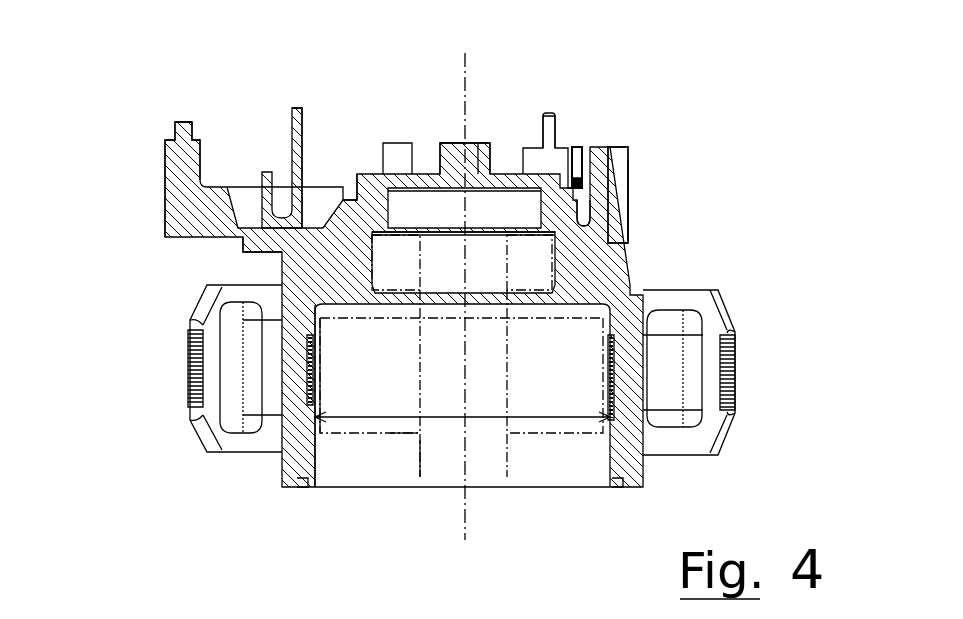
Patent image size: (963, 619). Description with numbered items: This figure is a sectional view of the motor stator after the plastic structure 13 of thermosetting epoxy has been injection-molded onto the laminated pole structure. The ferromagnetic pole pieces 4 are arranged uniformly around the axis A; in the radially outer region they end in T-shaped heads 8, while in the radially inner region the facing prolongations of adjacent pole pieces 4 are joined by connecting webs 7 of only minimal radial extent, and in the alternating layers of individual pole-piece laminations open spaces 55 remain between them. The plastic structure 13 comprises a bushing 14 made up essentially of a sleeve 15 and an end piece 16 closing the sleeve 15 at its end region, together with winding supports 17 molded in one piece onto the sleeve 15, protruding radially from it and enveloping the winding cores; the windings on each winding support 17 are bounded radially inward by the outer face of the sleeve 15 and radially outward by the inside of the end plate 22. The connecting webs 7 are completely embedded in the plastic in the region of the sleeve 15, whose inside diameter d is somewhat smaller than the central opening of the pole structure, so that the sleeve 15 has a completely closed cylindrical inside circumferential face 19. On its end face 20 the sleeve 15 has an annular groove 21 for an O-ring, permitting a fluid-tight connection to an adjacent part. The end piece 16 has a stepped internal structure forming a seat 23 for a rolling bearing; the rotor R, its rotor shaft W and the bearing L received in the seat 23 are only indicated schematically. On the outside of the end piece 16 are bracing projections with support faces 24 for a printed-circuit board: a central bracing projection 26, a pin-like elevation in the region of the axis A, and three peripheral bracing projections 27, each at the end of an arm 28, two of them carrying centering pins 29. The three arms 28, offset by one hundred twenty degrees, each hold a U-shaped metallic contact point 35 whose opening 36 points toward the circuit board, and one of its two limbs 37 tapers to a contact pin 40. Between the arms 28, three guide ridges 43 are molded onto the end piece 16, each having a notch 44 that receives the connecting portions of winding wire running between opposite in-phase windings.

The pole pieces 4 is at (726, 375).
The connecting webs 7 is at (617, 335).
The T-shaped heads 8 is at (180, 414).
The plastic structure 13 is at (673, 175).
The bushing 14 is at (296, 296).
The sleeve 15 is at (625, 430).
The end piece 16 is at (341, 197).
The winding supports 17 is at (268, 445).
The inside circumferential face 19 is at (326, 466).
The end face 20 is at (297, 488).
The annular groove 21 is at (620, 488).
The end plate 22 is at (215, 420).
The seat 23 is at (557, 258).
The support face 24 is at (478, 137).
The central bracing projection 26 is at (450, 150).
The peripheral bracing projections 27 is at (155, 172).
The arms 28 is at (253, 237).
The centering pins 29 is at (180, 122).
The contact points 35 is at (560, 160).
The opening 36 is at (280, 197).
The limbs 37 is at (300, 135).
The contact pin 40 is at (548, 113).
The guide ridges 43 is at (598, 182).
The notch 44 is at (578, 216).
The open spaces 55 is at (737, 340).
The axis A is at (468, 80).
The bearing L is at (383, 290).
The rotor R is at (390, 435).
The rotor shaft W is at (418, 460).
The inside diameter d is at (543, 417).